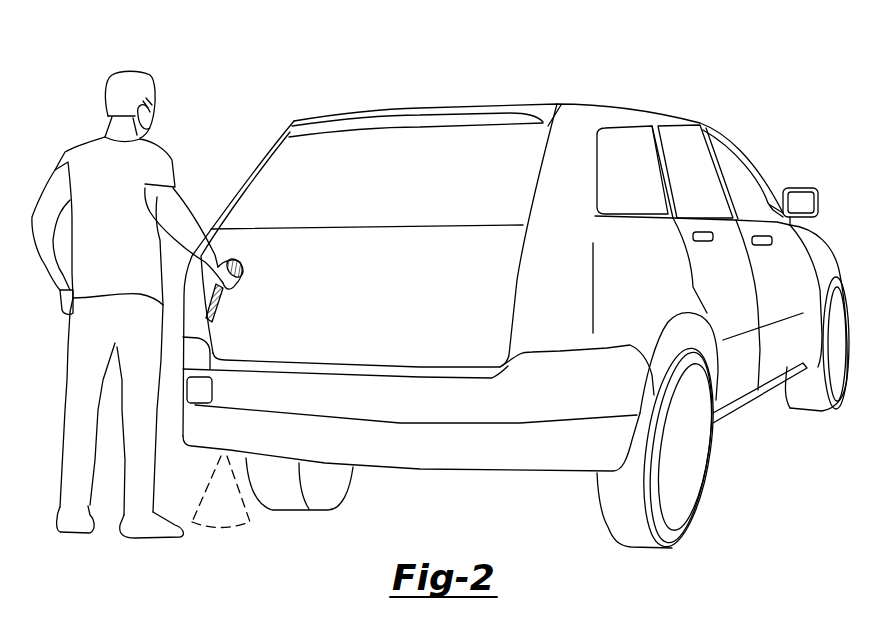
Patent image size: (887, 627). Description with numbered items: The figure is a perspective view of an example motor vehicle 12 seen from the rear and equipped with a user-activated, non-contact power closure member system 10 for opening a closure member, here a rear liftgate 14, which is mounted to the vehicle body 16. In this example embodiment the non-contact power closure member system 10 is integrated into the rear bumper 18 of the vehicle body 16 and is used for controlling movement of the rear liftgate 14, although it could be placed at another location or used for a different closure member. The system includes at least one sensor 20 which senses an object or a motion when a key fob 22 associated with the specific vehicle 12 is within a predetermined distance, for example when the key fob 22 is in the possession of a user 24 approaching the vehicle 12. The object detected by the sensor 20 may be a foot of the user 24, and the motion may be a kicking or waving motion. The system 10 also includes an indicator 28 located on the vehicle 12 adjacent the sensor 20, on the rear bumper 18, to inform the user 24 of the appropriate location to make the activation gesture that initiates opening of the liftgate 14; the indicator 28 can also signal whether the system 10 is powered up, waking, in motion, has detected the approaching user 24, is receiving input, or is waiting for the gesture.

The non-contact power closure member system 10 is at (255, 333).
The motor vehicle 12 is at (588, 77).
The rear liftgate 14 is at (480, 319).
The vehicle body 16 is at (618, 308).
The rear bumper 18 is at (447, 400).
The sensor 20 is at (221, 456).
The key fob 22 is at (243, 266).
The user 24 is at (100, 151).
The indicator 28 is at (200, 390).